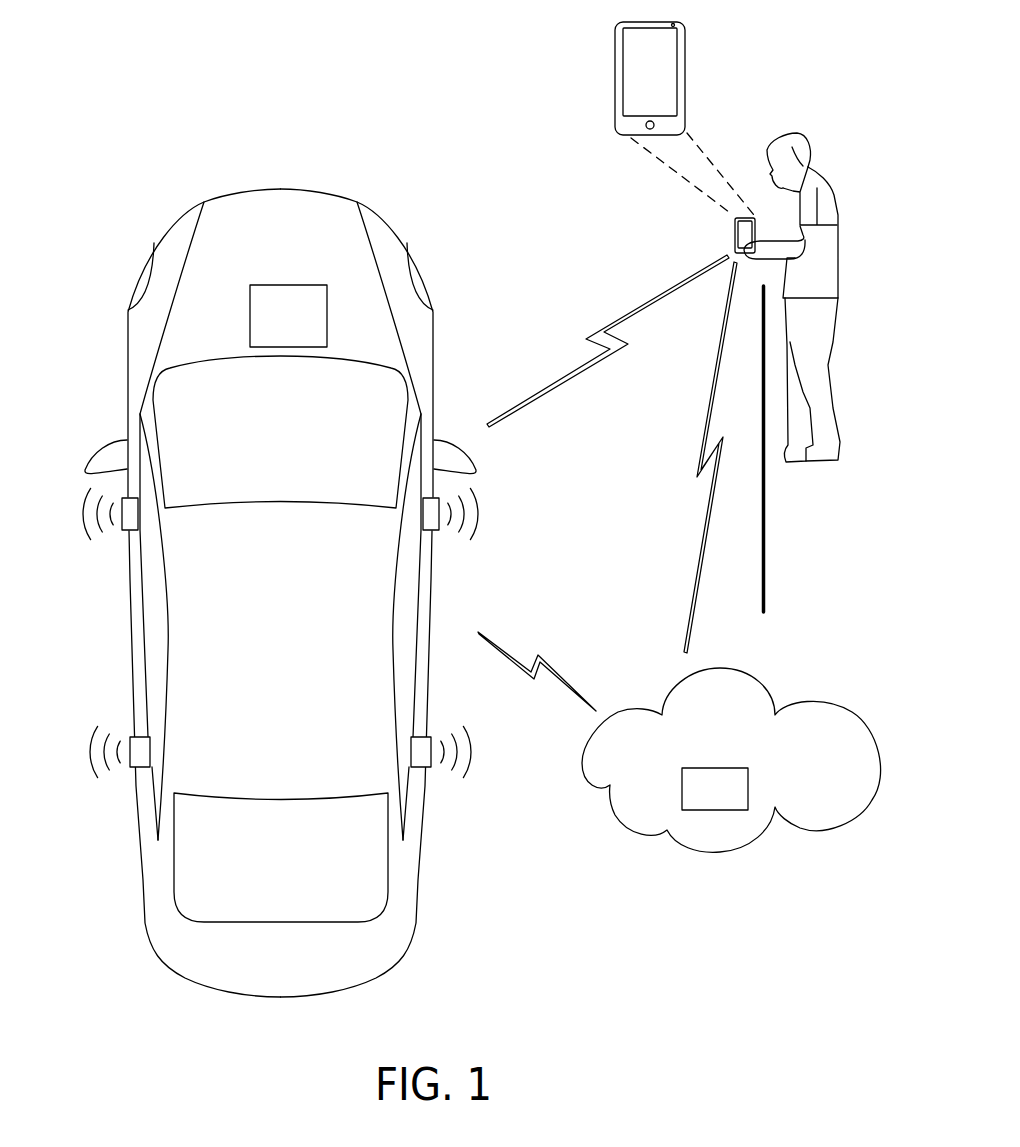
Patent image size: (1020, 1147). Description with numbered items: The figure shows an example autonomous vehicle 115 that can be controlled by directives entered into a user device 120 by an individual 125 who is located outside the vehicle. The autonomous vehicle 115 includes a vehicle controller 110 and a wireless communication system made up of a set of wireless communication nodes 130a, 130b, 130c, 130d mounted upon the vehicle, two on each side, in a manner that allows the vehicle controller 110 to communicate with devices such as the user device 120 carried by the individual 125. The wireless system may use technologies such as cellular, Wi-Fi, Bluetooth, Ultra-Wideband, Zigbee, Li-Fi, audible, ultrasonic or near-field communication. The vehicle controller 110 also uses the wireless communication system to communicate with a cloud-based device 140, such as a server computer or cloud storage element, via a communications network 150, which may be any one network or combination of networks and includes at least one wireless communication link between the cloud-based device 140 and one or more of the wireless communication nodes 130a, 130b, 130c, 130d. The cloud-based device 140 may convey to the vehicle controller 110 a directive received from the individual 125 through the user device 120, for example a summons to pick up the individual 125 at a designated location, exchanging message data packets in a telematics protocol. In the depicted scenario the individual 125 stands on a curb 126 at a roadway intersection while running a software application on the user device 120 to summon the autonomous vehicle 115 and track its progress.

The vehicle controller 110 is at (272, 325).
The autonomous vehicle 115 is at (150, 224).
The user device 120 is at (684, 88).
The individual 125 is at (866, 197).
The curb 126 is at (766, 552).
The wireless communication node 130a is at (128, 531).
The wireless communication node 130b is at (137, 768).
The wireless communication node 130c is at (433, 531).
The wireless communication node 130d is at (426, 769).
The cloud-based device 140 is at (699, 798).
The communications network 150 is at (781, 740).